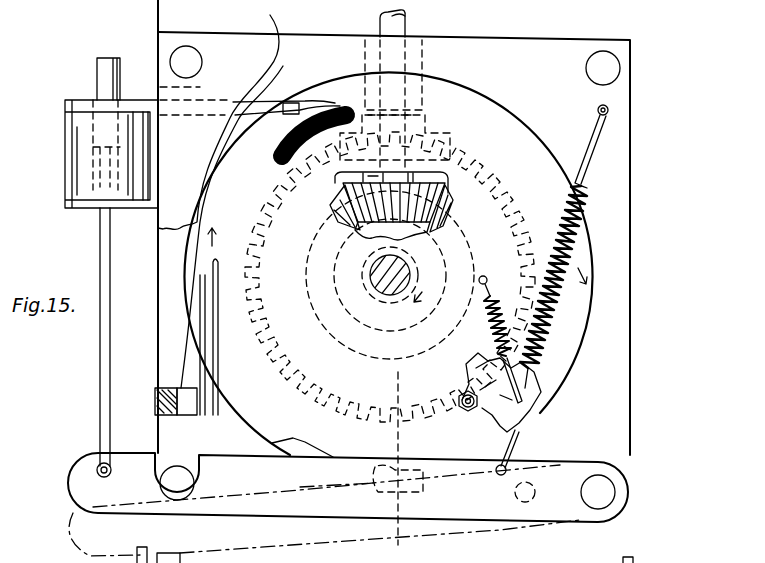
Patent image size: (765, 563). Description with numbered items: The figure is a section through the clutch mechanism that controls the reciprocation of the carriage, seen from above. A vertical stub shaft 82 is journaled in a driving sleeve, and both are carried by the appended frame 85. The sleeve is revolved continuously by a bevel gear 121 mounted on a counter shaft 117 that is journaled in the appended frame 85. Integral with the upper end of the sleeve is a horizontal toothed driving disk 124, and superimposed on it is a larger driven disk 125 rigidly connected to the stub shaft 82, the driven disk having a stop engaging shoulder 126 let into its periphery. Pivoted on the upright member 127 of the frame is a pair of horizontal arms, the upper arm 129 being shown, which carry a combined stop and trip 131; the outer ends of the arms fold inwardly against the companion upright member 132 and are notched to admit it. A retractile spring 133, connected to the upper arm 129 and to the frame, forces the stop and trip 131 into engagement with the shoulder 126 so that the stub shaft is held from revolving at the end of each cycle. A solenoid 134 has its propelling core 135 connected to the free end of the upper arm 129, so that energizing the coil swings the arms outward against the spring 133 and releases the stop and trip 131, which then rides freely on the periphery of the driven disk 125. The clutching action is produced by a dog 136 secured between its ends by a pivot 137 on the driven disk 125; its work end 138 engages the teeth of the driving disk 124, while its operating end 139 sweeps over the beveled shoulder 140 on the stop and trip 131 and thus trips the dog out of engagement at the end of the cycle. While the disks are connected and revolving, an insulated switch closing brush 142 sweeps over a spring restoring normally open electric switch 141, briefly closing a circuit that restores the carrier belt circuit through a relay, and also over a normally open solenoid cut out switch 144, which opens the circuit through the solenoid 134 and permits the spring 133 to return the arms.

The stub shaft 82 is at (408, 265).
The appended frame 85 is at (630, 358).
The counter shaft 117 is at (406, 21).
The bevel gear 121 is at (447, 193).
The toothed driving disk 124 is at (503, 132).
The driven disk 125 is at (575, 315).
The stop engaging shoulder 126 is at (402, 455).
The upright member 127 is at (600, 487).
The upper horizontal arm 129 is at (326, 486).
The combined stop and trip 131 is at (351, 538).
The companion upright member 132 is at (181, 464).
The retractile spring 133 is at (583, 231).
The solenoid 134 is at (70, 173).
The propelling core 135 is at (98, 77).
The dog 136 is at (500, 425).
The pivot 137 is at (463, 406).
The work end 138 is at (540, 403).
The operating end 139 is at (432, 450).
The beveled shoulder 140 is at (375, 486).
The electric switch 141 is at (183, 373).
The switch closing brush 142 is at (274, 157).
The solenoid cut out switch 144 is at (257, 100).